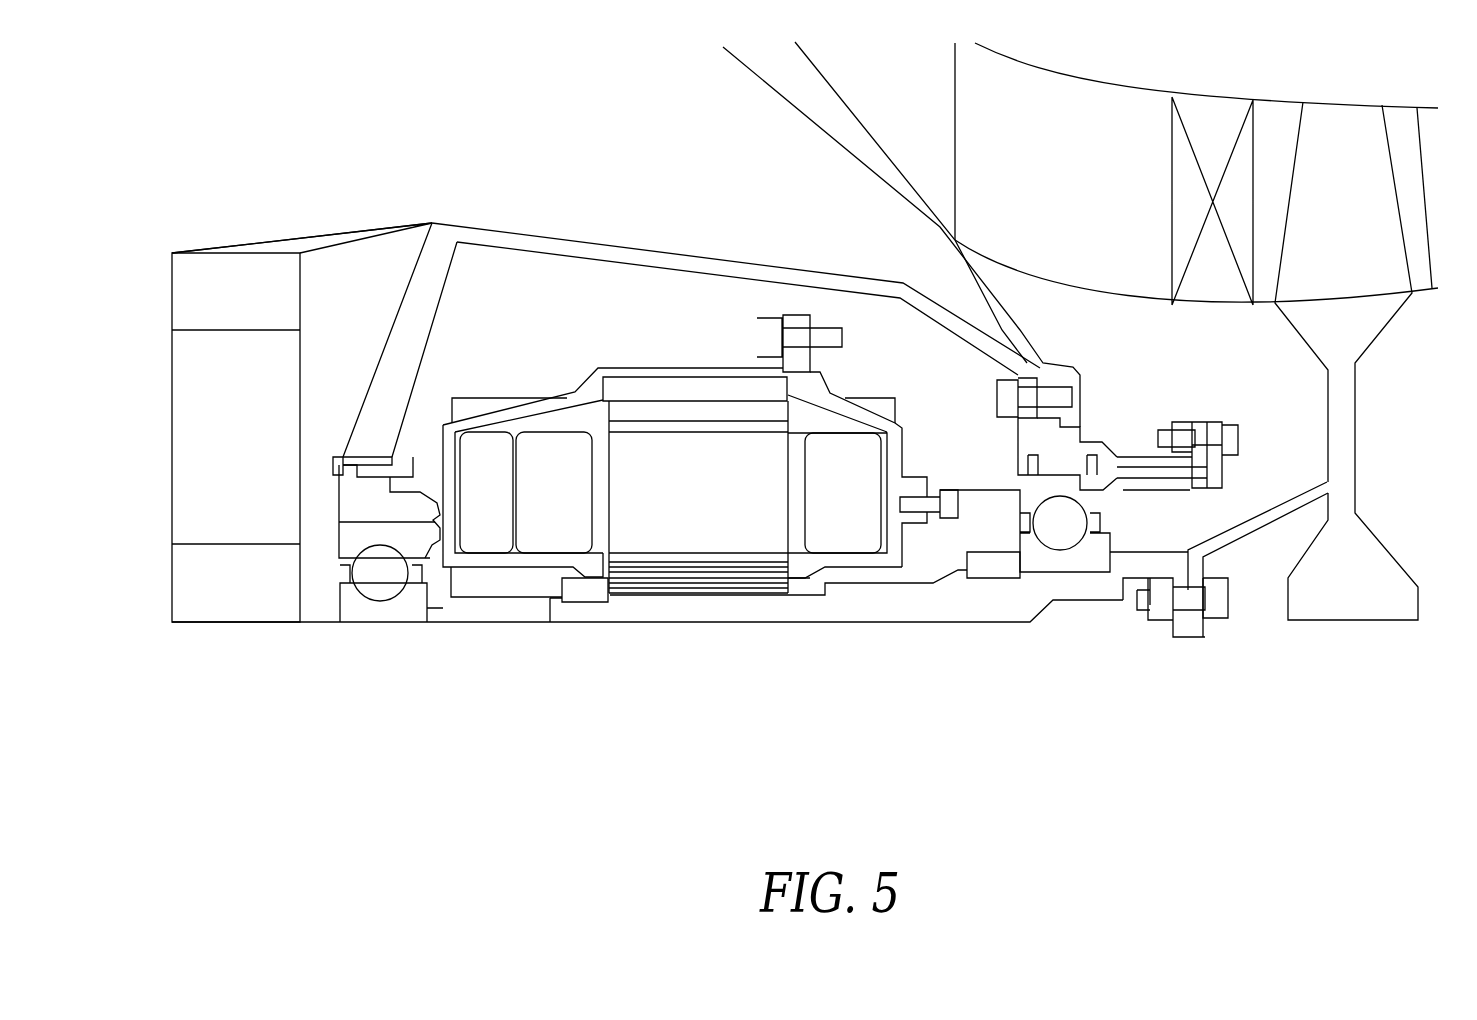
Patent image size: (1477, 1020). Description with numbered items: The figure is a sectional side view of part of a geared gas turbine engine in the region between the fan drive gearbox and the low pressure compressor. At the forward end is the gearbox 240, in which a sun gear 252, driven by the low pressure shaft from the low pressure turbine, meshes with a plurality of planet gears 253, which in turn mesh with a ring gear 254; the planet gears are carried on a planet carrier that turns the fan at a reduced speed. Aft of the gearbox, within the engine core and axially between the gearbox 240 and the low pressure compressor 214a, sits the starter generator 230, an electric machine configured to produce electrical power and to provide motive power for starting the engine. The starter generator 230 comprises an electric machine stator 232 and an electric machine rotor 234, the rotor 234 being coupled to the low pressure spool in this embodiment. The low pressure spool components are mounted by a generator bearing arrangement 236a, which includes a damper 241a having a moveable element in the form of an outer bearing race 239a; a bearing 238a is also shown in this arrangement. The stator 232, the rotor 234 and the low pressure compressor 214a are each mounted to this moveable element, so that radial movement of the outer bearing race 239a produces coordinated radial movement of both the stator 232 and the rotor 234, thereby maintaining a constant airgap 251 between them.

The gearbox 240 is at (182, 212).
The ring gear 254 is at (220, 250).
The planet gears 253 is at (172, 438).
The sun gear 252 is at (172, 582).
The electric machine stator 232 is at (570, 386).
The starter generator 230 is at (625, 680).
The airgap 251 is at (697, 566).
The electric machine rotor 234 is at (762, 590).
The damper 241a is at (1018, 457).
The low pressure compressor 214a is at (1390, 243).
The generator bearing arrangement 236a is at (1055, 632).
The bearing 238a is at (1035, 560).
The outer bearing race 239a is at (1027, 497).